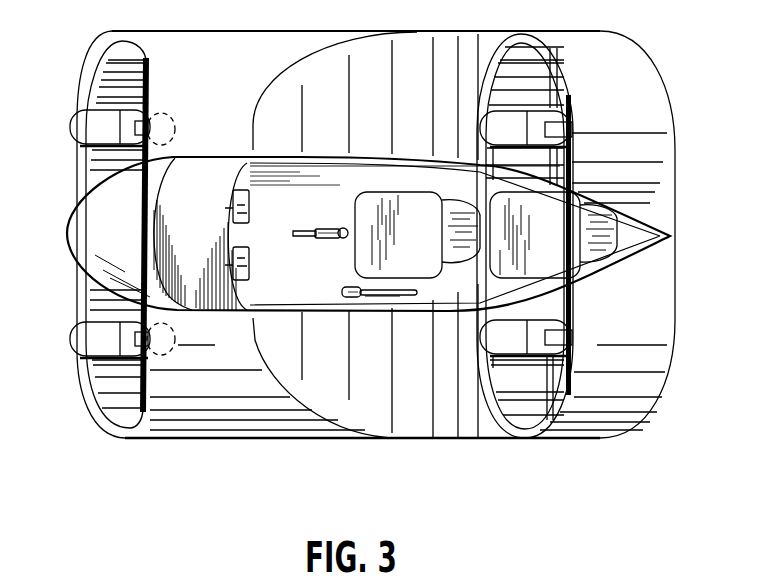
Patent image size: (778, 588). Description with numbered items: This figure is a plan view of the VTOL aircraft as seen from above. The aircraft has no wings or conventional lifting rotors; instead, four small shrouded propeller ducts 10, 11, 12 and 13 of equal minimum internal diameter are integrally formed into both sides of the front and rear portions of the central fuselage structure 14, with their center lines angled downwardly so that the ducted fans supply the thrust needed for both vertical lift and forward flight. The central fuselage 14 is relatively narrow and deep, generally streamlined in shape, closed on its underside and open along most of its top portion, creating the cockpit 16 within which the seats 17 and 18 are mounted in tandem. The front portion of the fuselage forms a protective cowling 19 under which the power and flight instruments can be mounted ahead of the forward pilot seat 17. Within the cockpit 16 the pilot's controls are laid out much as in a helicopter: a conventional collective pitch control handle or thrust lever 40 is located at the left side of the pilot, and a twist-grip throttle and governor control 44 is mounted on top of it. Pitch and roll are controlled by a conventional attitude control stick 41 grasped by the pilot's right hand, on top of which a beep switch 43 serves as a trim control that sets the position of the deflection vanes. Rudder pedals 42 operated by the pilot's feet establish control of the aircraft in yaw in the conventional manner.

The shrouded propeller duct 10 is at (122, 30).
The shrouded propeller duct 11 is at (143, 442).
The shrouded propeller duct 12 is at (588, 30).
The shrouded propeller duct 13 is at (588, 442).
The central fuselage structure 14 is at (73, 200).
The cockpit 16 is at (304, 197).
The forward pilot seat 17 is at (420, 193).
The seat 18 is at (577, 200).
The protective cowling 19 is at (128, 248).
The thrust lever 40 is at (388, 298).
The attitude control stick 41 is at (325, 229).
The rudder pedals 42 is at (250, 218).
The beep switch 43 is at (346, 229).
The twist-grip throttle and governor control 44 is at (343, 291).